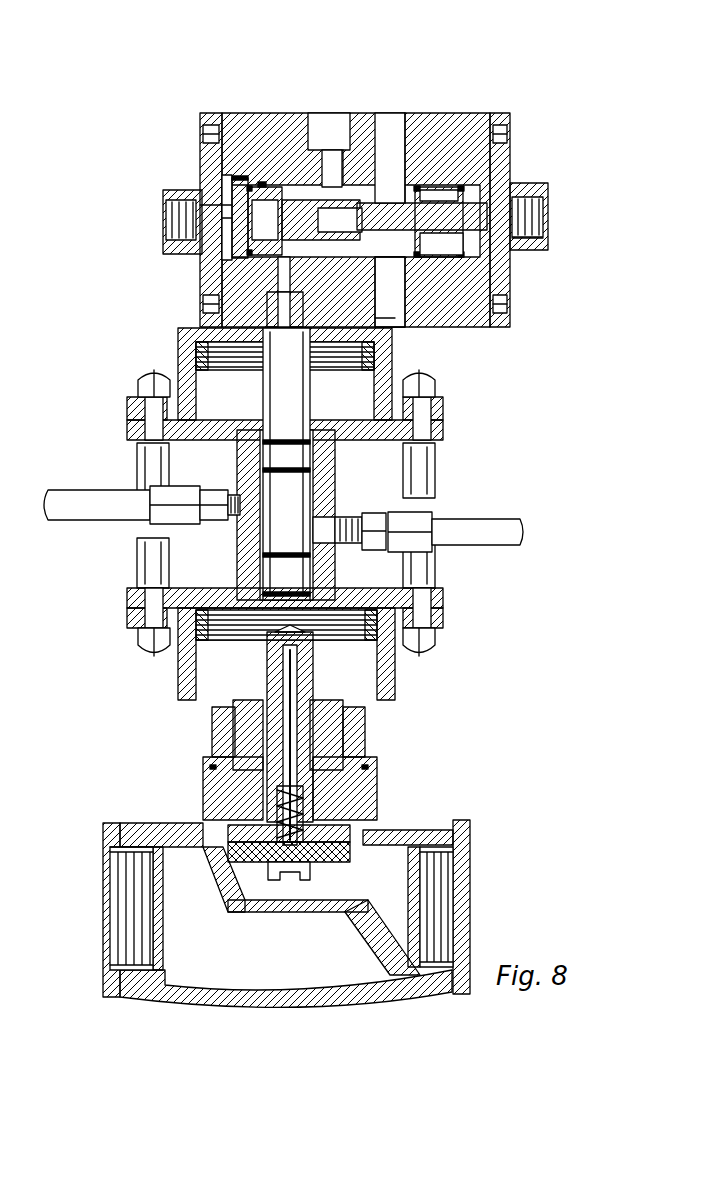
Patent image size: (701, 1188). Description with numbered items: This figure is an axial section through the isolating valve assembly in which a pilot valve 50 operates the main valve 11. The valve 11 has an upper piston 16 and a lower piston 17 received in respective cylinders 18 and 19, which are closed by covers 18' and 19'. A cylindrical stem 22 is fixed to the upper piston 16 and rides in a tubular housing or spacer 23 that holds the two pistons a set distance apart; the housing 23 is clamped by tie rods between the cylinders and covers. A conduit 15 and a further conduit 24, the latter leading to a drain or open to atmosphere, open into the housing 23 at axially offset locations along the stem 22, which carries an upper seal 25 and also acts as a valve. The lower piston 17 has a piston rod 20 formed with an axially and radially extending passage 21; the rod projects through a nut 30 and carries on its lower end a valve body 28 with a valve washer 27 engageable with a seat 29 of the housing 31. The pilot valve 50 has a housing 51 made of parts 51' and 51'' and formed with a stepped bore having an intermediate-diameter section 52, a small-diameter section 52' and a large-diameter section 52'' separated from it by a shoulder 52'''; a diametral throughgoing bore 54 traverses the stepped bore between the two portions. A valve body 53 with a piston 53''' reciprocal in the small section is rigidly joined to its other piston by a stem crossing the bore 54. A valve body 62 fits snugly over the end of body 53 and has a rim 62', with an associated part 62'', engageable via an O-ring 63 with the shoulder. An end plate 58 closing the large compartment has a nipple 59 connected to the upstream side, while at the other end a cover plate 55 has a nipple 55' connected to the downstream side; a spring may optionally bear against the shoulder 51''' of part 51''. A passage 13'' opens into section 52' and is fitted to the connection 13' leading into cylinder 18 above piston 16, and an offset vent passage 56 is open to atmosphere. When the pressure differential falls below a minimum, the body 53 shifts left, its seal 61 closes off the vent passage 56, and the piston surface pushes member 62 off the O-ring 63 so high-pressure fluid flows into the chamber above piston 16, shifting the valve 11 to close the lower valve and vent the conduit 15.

The valve 11 is at (104, 640).
The connection 13' is at (214, 315).
The passage 13'' is at (209, 285).
The conduit 15 is at (520, 526).
The upper piston 16 is at (388, 356).
The lower piston 17 is at (440, 632).
The cylinder 18 is at (321, 479).
The cover 18' is at (316, 429).
The cylinder 19 is at (339, 654).
The cover 19' is at (325, 602).
The piston rod 20 is at (366, 736).
The passage 21 is at (378, 772).
The cylindrical stem 22 is at (312, 478).
The tubular housing 23 is at (240, 547).
The conduit 24 is at (105, 492).
The upper seal 25 is at (340, 528).
The valve washer 27 is at (352, 858).
The valve body 28 is at (380, 822).
The seat 29 is at (343, 912).
The nut 30 is at (214, 742).
The housing 31 is at (172, 988).
The pilot valve 50 is at (542, 150).
The housing 51 is at (329, 95).
The housing part 51' is at (463, 99).
The housing part 51'' is at (258, 126).
The shoulder 51''' is at (442, 244).
The intermediate-diameter section 52 is at (422, 142).
The small-diameter section 52' is at (278, 148).
The large-diameter section 52'' is at (165, 188).
The shoulder 52''' is at (236, 106).
The valve body 53 is at (383, 176).
The piston 53''' is at (303, 220).
The diametral bore 54 is at (401, 160).
The cover plate 55 is at (537, 220).
The nipple 55' is at (559, 213).
The vent passage 56 is at (344, 160).
The end plate 58 is at (212, 160).
The nipple 59 is at (166, 243).
The seal 61 is at (338, 255).
The valve body 62 is at (193, 231).
The rim 62' is at (188, 204).
The cap seal 62'' is at (160, 213).
The O-ring 63 is at (244, 188).